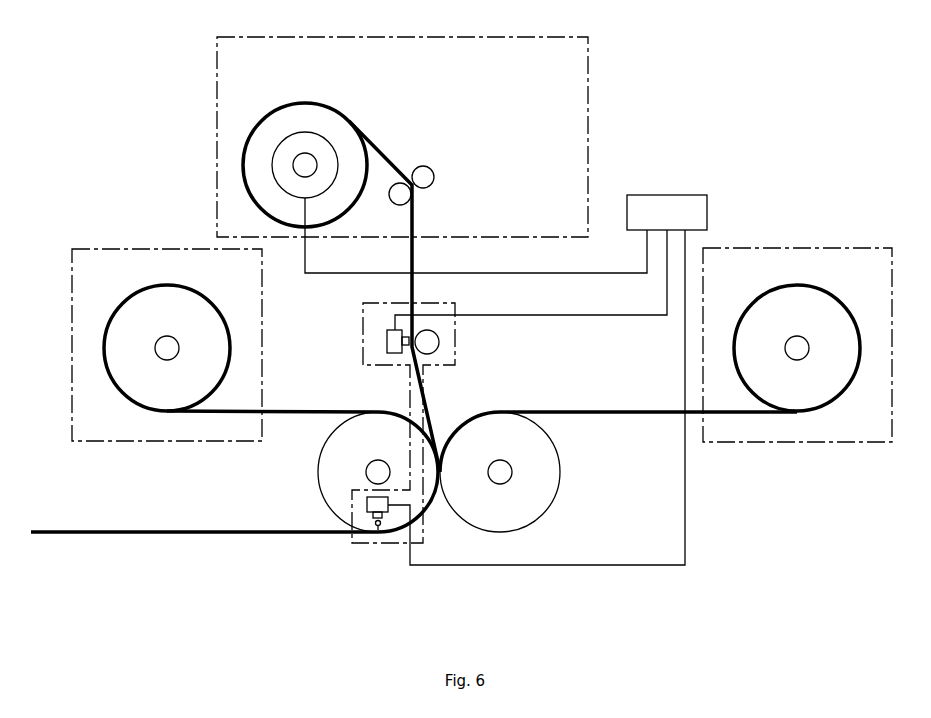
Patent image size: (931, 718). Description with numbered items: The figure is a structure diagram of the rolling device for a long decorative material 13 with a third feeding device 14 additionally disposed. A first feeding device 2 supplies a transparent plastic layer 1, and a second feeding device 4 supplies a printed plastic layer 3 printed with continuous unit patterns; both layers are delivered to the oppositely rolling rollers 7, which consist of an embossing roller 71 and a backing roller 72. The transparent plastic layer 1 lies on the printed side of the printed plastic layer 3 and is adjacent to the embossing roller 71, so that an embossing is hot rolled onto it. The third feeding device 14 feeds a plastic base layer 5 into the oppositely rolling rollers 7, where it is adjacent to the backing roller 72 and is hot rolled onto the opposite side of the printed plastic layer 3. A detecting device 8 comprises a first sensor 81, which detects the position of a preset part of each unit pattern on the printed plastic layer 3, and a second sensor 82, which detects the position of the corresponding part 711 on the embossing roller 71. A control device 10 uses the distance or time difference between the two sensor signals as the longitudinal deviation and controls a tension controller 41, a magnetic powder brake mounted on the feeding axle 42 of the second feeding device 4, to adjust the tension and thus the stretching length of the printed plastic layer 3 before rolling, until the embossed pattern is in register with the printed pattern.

The transparent plastic layer 1 is at (288, 410).
The first feeding device 2 is at (92, 263).
The printed plastic layer 3 is at (388, 158).
The second feeding device 4 is at (233, 83).
The tension controller 41 is at (281, 168).
The feeding axle 42 is at (305, 160).
The plastic base layer 5 is at (627, 415).
The oppositely rolling rollers 7 is at (434, 530).
The embossing roller 71 is at (330, 450).
The backing roller 72 is at (545, 501).
The corresponding part 711 is at (378, 545).
The detecting device 8 is at (381, 414).
The first sensor 81 is at (389, 332).
The second sensor 82 is at (370, 500).
The control device 10 is at (669, 218).
The long decorative material 13 is at (171, 530).
The third feeding device 14 is at (855, 262).